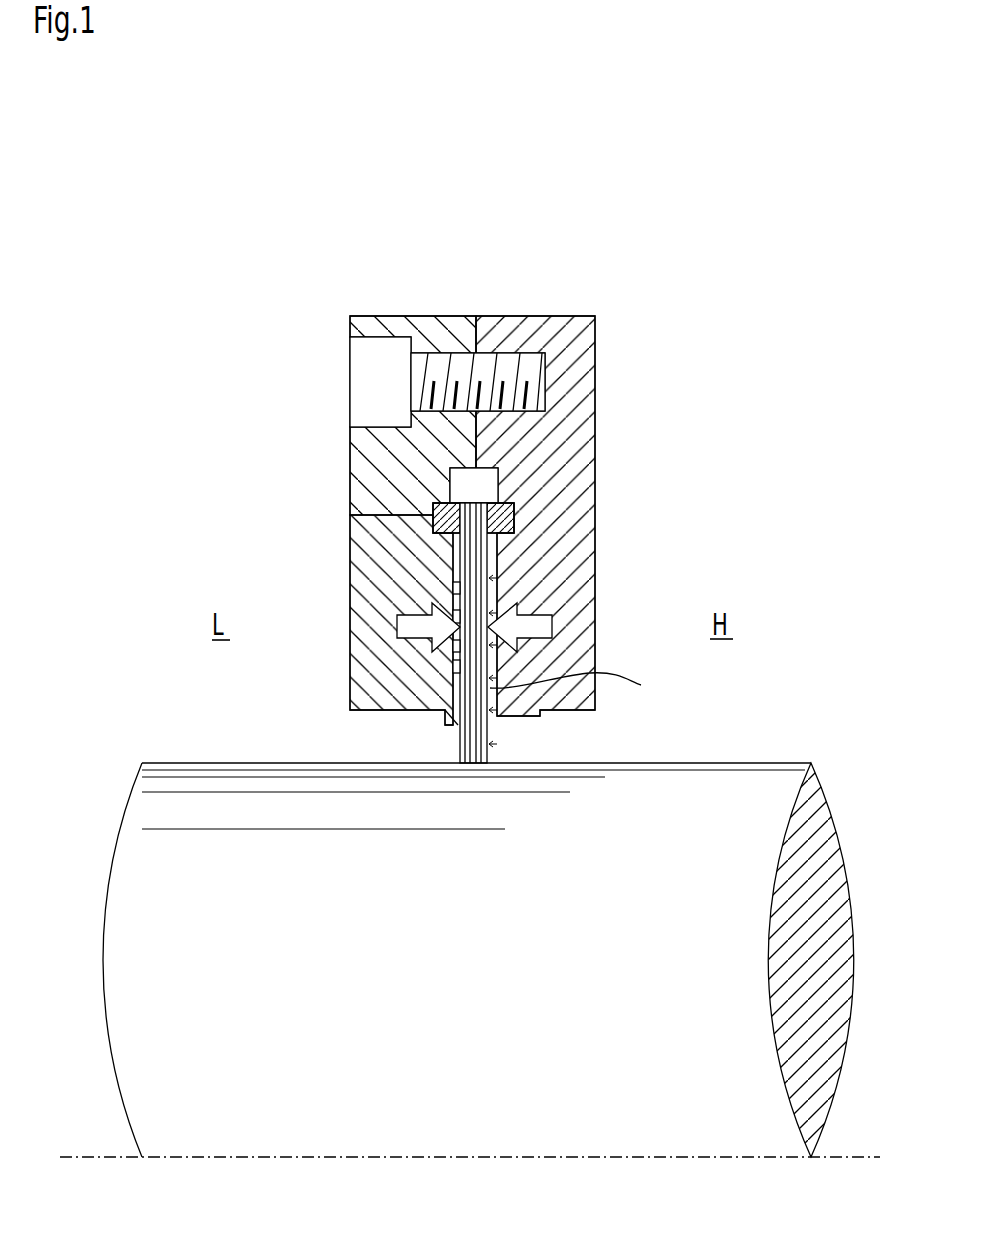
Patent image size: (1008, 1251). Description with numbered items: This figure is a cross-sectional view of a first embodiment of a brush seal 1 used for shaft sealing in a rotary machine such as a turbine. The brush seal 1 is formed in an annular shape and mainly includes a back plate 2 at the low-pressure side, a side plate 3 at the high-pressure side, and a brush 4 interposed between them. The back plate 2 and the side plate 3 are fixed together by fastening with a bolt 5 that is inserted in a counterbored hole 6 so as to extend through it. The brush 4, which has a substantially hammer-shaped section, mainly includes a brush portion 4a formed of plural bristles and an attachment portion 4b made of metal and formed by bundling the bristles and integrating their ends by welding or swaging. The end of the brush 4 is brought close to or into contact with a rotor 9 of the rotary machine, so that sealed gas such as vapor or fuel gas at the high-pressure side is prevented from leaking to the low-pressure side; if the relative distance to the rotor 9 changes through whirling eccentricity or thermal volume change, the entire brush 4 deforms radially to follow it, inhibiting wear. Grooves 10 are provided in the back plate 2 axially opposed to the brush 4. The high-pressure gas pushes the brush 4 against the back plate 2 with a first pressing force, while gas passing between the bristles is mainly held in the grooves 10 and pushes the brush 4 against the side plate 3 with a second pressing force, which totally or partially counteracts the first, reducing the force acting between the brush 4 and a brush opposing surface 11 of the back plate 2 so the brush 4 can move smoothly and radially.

The brush seal 1 is at (494, 486).
The back plate 2 is at (360, 492).
The side plate 3 is at (577, 400).
The brush 4 is at (575, 615).
The brush portion 4a is at (477, 548).
The attachment portion 4b is at (513, 522).
The bolt 5 is at (373, 377).
The counterbored hole 6 is at (367, 337).
The rotor 9 is at (757, 790).
The grooves 10 is at (453, 665).
The brush opposing surface 11 is at (462, 683).